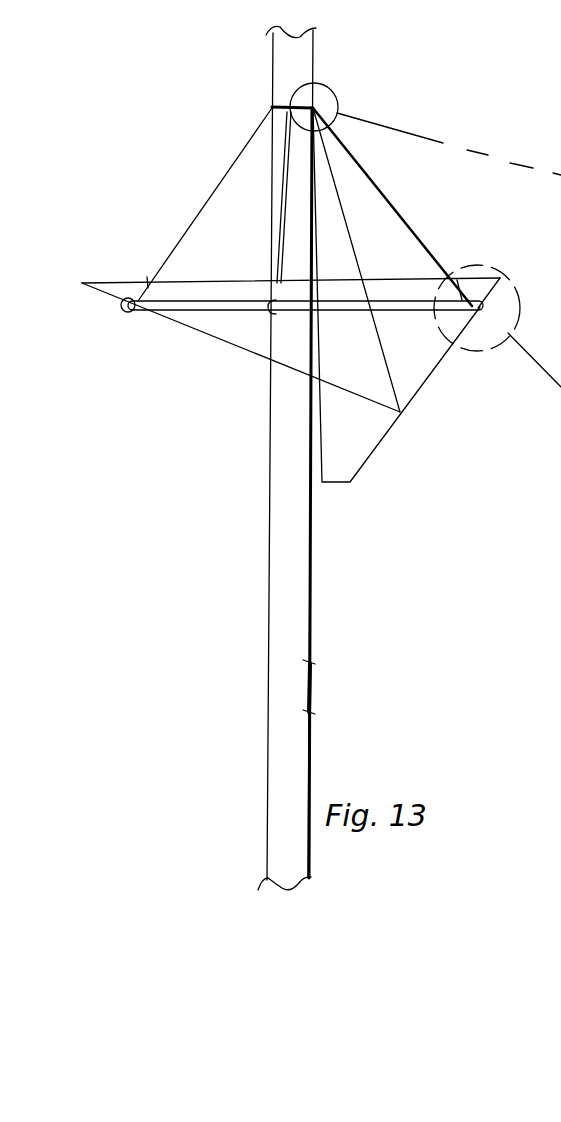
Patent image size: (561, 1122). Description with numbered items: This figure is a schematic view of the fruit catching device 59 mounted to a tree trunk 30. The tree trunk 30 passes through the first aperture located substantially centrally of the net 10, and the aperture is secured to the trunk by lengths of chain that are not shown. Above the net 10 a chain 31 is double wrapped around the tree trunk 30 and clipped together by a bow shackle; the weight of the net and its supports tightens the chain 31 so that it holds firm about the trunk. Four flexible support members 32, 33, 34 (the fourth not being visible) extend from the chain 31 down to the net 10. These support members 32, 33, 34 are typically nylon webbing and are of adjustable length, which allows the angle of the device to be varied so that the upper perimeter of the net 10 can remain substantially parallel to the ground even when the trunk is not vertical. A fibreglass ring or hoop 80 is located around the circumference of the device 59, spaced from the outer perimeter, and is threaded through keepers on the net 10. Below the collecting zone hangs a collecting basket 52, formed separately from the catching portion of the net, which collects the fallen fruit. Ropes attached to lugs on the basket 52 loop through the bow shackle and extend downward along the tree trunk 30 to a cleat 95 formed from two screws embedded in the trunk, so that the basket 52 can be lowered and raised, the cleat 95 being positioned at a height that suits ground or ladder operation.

The net 10 is at (412, 367).
The tree trunk 30 is at (290, 612).
The chain 31 is at (316, 107).
The flexible support member 32 is at (202, 200).
The flexible support member 33 is at (275, 250).
The flexible support member 34 is at (427, 251).
The collecting basket 52 is at (365, 443).
The device 59 is at (422, 228).
The fibreglass ring 80 is at (212, 310).
The cleat 95 is at (315, 693).